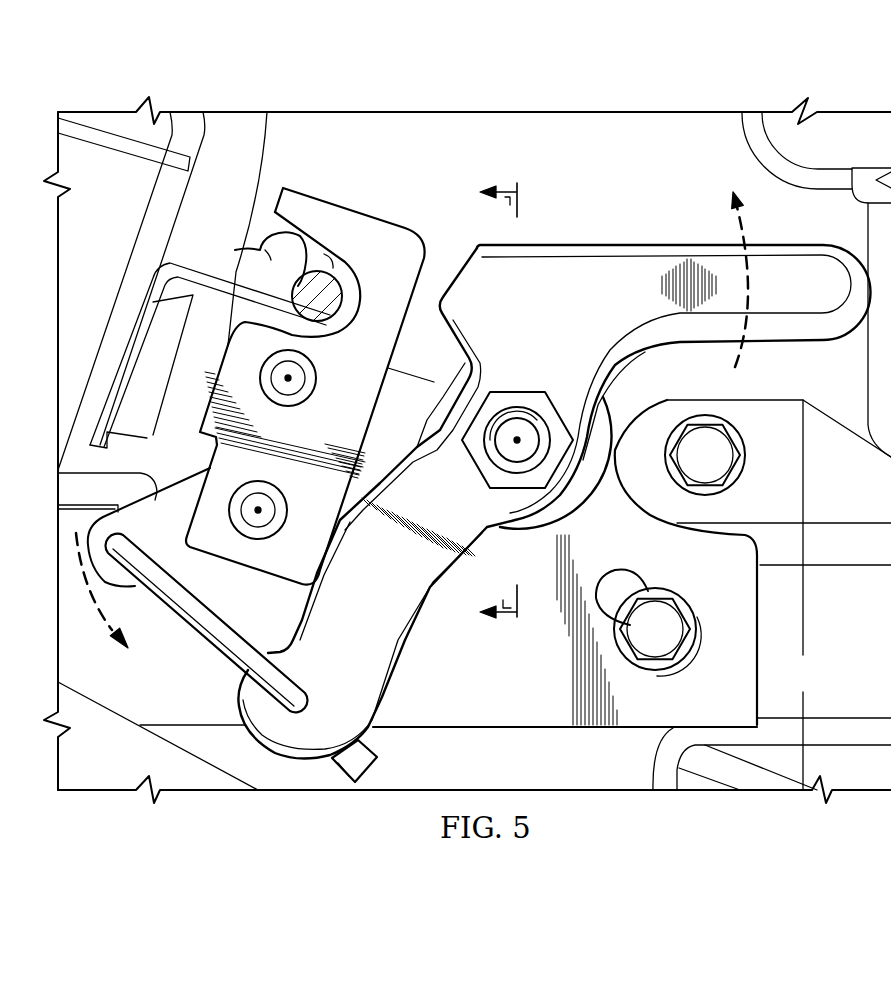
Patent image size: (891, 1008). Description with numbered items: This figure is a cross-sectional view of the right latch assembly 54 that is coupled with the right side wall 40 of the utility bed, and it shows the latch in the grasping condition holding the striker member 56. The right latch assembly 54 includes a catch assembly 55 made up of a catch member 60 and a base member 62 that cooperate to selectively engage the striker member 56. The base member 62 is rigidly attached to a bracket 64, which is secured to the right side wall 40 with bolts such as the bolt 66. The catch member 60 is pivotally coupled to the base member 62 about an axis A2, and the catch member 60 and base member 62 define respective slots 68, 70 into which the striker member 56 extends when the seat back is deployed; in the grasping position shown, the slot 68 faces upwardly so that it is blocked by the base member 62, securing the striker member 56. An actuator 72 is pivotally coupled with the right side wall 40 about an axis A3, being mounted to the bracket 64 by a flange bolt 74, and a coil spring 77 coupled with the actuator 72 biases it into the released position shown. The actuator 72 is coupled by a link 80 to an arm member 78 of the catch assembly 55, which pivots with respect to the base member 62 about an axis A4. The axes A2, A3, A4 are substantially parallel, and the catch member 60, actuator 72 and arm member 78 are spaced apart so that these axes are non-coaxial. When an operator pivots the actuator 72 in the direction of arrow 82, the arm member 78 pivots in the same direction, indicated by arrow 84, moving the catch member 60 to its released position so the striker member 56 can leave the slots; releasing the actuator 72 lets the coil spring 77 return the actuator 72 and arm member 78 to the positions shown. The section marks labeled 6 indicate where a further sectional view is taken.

The right side wall 40 is at (636, 179).
The right latch assembly 54 is at (697, 180).
The catch assembly 55 is at (385, 200).
The striker member 56 is at (352, 322).
The catch member 60 is at (266, 256).
The base member 62 is at (207, 523).
The bracket 64 is at (743, 670).
The bolt 66 is at (663, 601).
The slot 68 is at (313, 263).
The slot 70 is at (348, 280).
The actuator 72 is at (807, 243).
The flange bolt 74 is at (507, 407).
The coil spring 77 is at (527, 535).
The arm member 78 is at (187, 565).
The link 80 is at (212, 652).
The arrow 82 is at (752, 280).
The arrow 84 is at (97, 604).
The axis A2 is at (296, 375).
The axis A3 is at (522, 428).
The axis A4 is at (266, 506).
The section line 6 is at (501, 403).